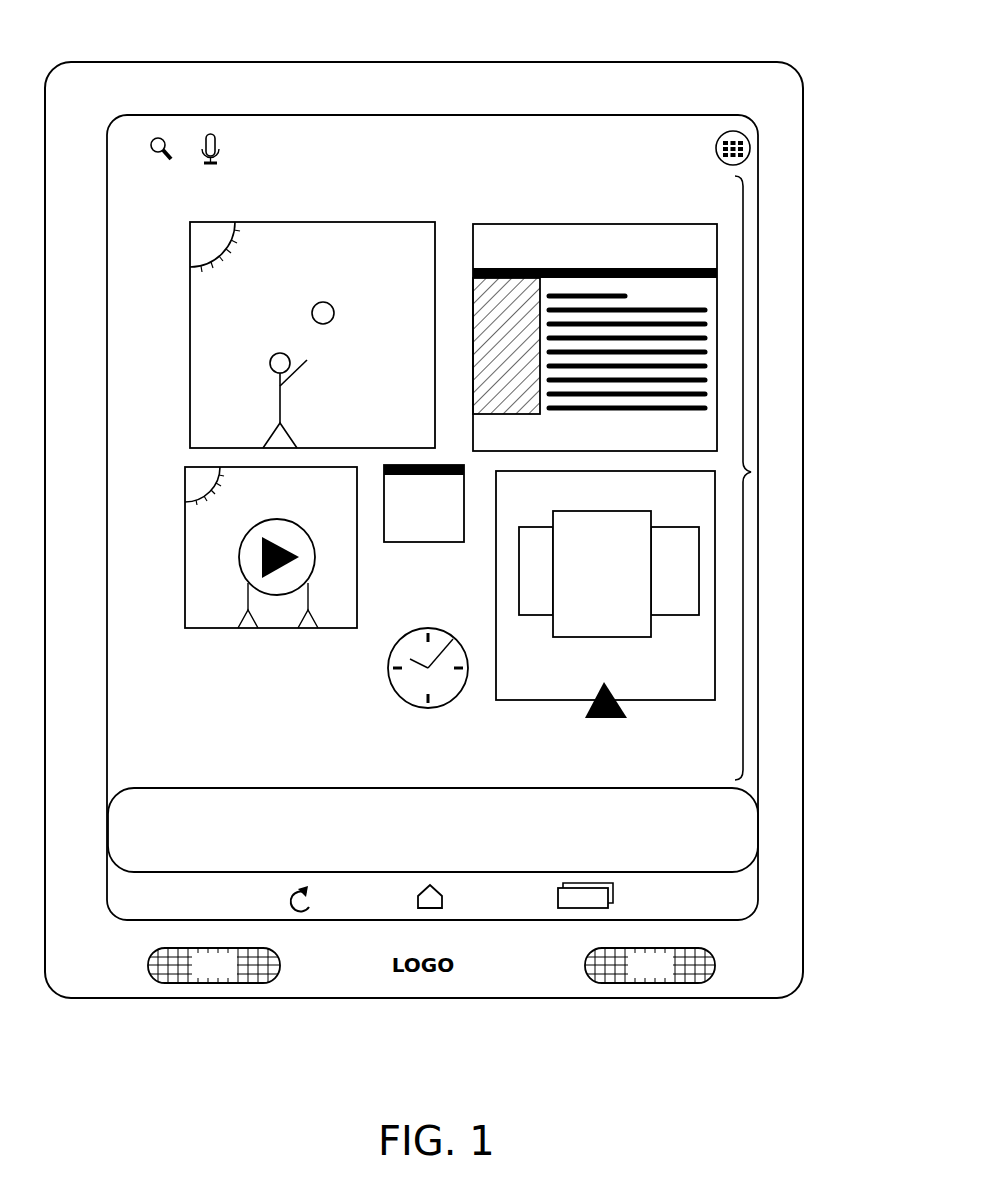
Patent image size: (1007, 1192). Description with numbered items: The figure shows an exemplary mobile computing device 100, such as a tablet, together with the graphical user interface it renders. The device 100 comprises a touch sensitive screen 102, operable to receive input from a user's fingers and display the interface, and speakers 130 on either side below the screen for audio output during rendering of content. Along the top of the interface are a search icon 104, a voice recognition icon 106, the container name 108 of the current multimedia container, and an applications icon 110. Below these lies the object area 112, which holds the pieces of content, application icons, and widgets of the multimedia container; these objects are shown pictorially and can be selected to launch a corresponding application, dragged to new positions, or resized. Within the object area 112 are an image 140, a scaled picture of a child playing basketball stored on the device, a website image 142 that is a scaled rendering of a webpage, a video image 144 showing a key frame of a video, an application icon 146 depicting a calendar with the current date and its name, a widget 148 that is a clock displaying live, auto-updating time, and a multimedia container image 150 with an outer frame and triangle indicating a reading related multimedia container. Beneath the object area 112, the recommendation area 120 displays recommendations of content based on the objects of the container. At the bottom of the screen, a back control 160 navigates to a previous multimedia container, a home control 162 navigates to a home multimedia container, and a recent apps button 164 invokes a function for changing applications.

The device 100 is at (118, 58).
The screen 102 is at (599, 110).
The search icon 104 is at (157, 131).
The voice recognition icon 106 is at (214, 126).
The container name 108 is at (453, 120).
The applications icon 110 is at (733, 126).
The object area 112 is at (754, 472).
The recommendation area 120 is at (433, 830).
The speakers 130 is at (431, 965).
The image 140 is at (316, 216).
The website image 142 is at (599, 214).
The video image 144 is at (276, 633).
The application icon 146 is at (412, 586).
The widget 148 is at (430, 713).
The multimedia container image 150 is at (648, 710).
The back control 160 is at (316, 902).
The home control 162 is at (461, 900).
The recent apps button 164 is at (614, 900).